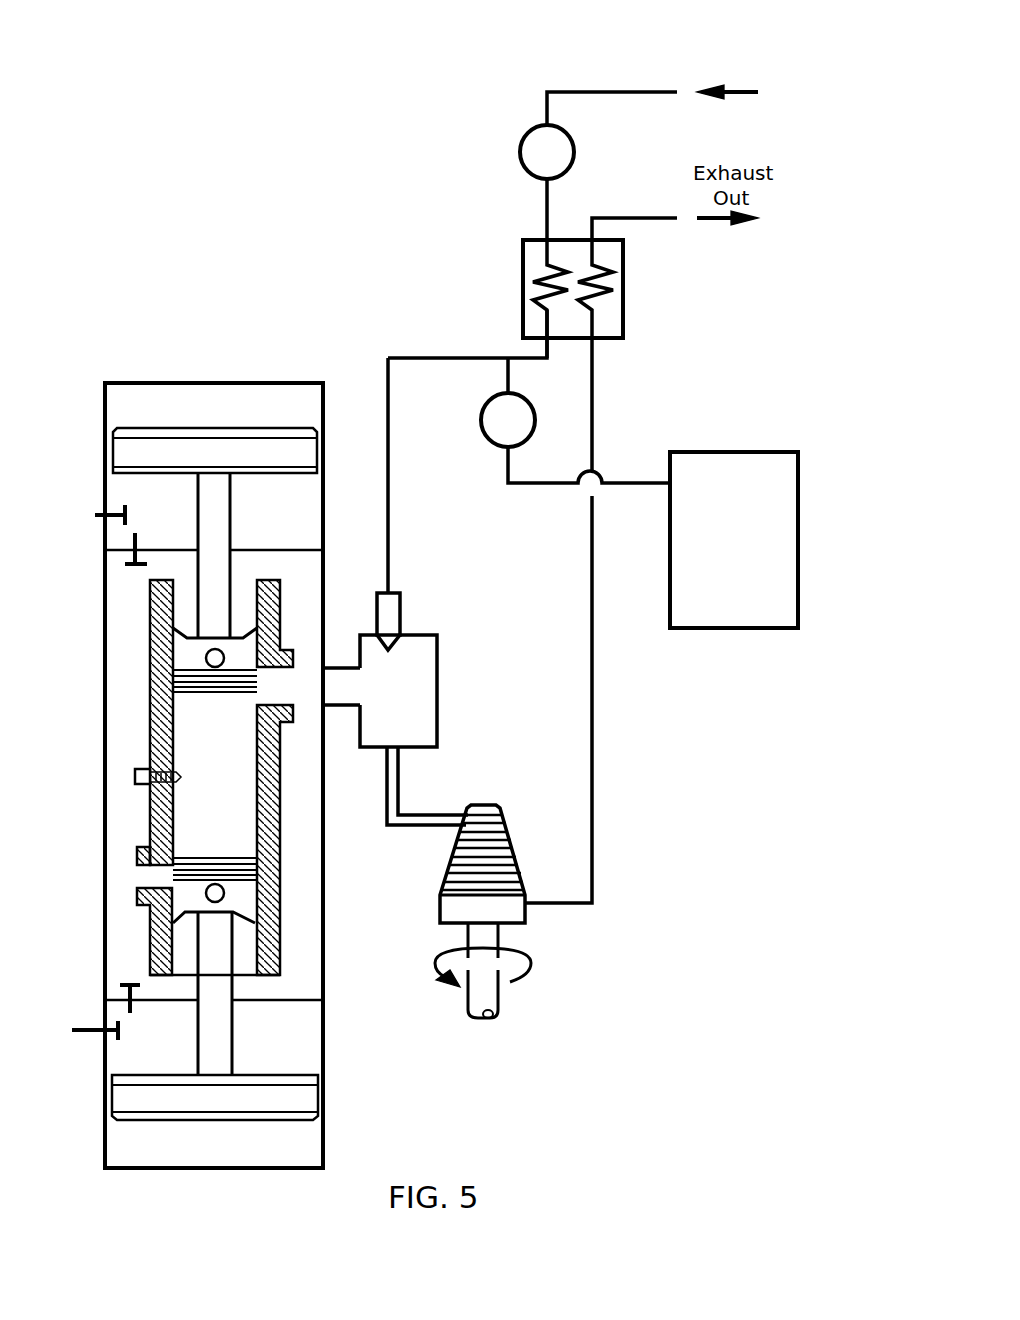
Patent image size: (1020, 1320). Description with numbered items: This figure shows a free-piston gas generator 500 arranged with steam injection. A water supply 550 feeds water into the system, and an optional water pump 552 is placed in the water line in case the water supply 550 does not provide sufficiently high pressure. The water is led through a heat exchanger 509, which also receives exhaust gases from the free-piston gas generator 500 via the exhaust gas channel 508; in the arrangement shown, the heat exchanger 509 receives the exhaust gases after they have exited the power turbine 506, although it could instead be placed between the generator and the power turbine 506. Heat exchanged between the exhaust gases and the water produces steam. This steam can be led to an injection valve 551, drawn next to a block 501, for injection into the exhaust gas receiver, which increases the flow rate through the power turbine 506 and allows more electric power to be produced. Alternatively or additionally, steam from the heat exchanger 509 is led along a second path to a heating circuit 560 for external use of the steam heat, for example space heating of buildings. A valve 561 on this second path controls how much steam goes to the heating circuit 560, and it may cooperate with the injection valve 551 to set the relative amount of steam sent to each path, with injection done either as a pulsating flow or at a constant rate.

The free-piston gas generator 500 is at (325, 985).
The combustion chamber / mixing block 501 is at (423, 697).
The power turbine 506 is at (515, 910).
The exhaust gas channel 508 is at (592, 775).
The heat exchanger 509 is at (535, 262).
The water supply 550 is at (597, 92).
The injection valve 551 is at (390, 613).
The water pump 552 is at (530, 152).
The heating circuit 560 is at (733, 615).
The valve 561 is at (495, 432).